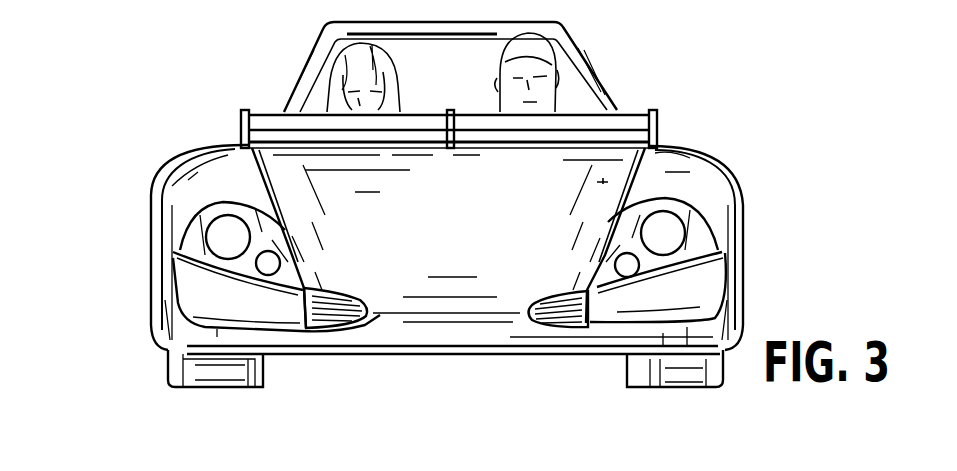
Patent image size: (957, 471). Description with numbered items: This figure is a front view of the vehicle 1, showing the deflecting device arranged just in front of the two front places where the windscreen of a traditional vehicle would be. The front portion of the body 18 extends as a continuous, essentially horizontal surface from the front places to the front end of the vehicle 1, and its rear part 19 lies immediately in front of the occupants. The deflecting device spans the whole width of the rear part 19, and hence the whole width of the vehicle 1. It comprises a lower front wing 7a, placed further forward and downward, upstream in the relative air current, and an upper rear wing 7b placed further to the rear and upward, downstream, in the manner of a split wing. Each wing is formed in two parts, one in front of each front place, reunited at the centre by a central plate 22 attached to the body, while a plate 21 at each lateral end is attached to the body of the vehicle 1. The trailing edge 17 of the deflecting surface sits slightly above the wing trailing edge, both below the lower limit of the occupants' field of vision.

The vehicle 1 is at (115, 278).
The lower front wing 7a is at (588, 135).
The upper rear wing 7b is at (630, 125).
The trailing edge 17 is at (434, 72).
The front portion of the body 18 is at (445, 255).
The rear part 19 is at (392, 146).
The plate 21 is at (240, 133).
The central plate 22 is at (451, 113).